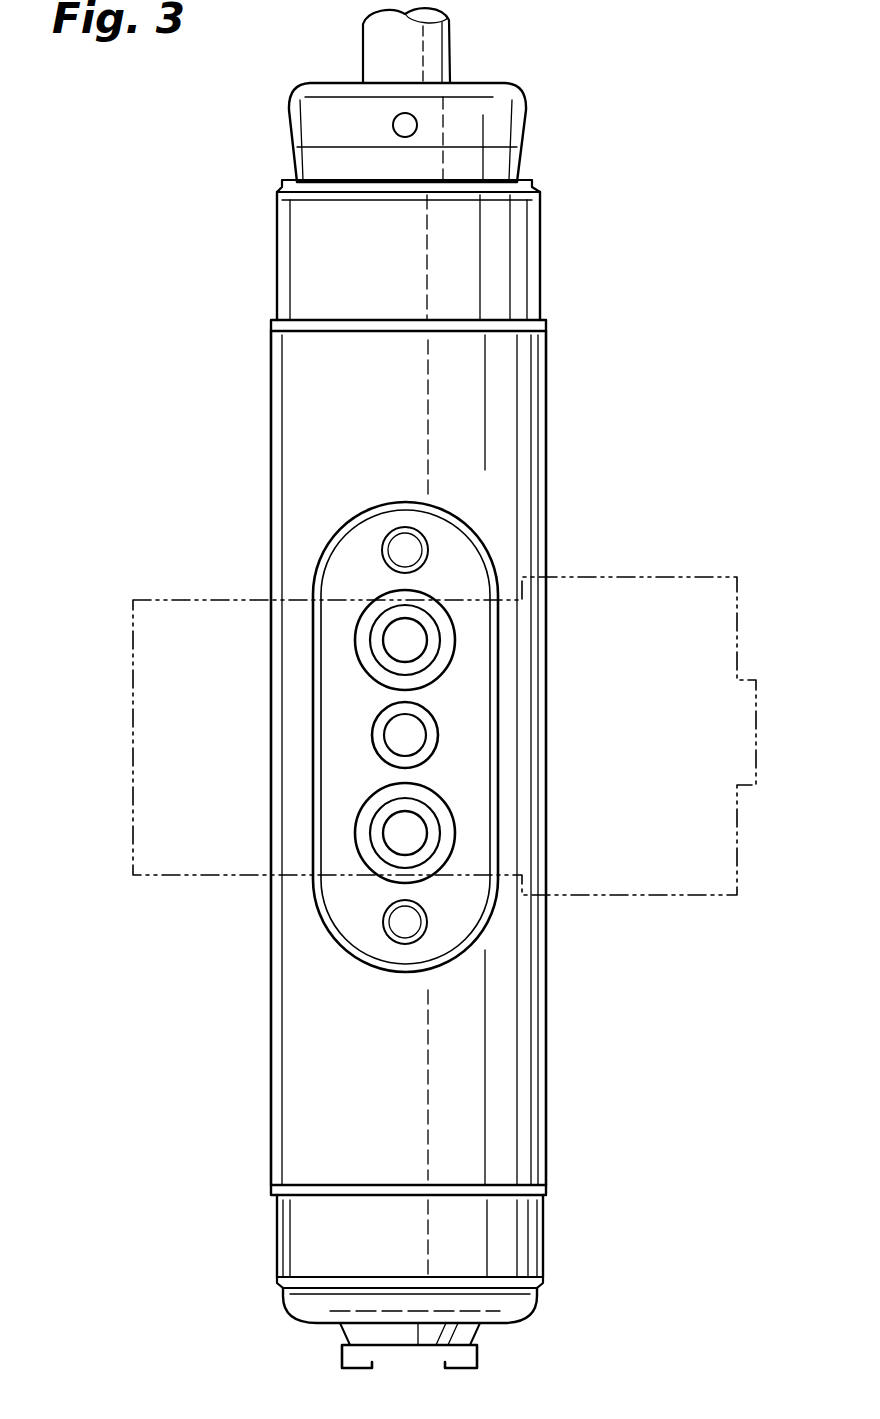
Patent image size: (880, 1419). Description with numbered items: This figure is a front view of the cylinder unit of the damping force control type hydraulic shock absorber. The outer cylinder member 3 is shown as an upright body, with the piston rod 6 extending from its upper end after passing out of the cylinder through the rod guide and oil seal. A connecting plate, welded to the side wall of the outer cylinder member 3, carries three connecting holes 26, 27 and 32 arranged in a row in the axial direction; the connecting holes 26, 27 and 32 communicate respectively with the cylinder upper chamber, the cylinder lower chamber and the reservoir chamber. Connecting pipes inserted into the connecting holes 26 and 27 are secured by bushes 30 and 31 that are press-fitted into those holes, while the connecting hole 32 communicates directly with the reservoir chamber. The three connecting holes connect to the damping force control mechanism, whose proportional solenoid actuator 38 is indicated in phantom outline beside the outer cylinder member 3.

The outer cylinder member 3 is at (294, 384).
The piston rod 6 is at (364, 52).
The connecting hole 26 is at (379, 623).
The connecting hole 27 is at (377, 829).
The bush 30 is at (432, 631).
The bush 31 is at (436, 843).
The connecting hole 32 is at (421, 736).
The proportional solenoid actuator 38 is at (706, 577).